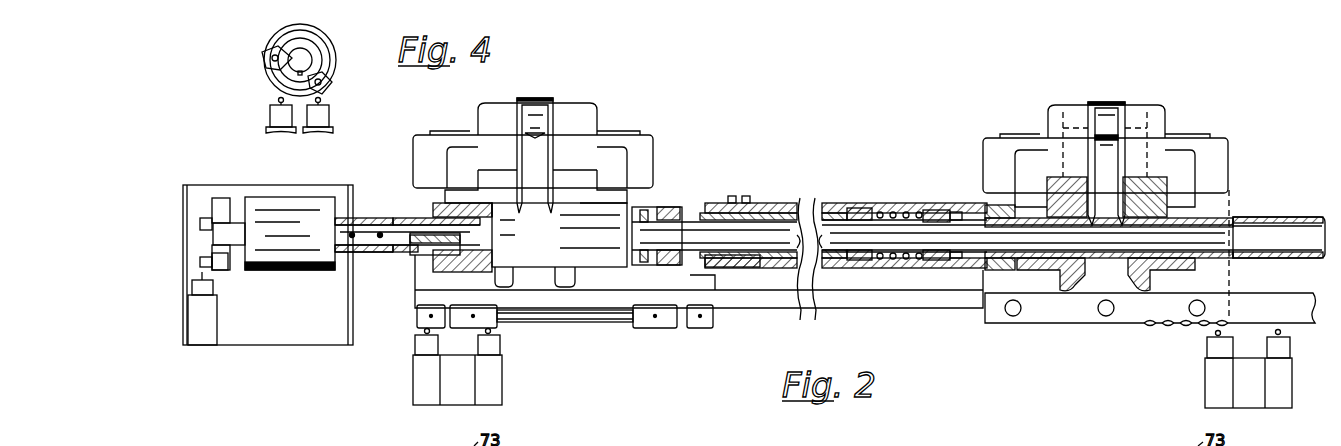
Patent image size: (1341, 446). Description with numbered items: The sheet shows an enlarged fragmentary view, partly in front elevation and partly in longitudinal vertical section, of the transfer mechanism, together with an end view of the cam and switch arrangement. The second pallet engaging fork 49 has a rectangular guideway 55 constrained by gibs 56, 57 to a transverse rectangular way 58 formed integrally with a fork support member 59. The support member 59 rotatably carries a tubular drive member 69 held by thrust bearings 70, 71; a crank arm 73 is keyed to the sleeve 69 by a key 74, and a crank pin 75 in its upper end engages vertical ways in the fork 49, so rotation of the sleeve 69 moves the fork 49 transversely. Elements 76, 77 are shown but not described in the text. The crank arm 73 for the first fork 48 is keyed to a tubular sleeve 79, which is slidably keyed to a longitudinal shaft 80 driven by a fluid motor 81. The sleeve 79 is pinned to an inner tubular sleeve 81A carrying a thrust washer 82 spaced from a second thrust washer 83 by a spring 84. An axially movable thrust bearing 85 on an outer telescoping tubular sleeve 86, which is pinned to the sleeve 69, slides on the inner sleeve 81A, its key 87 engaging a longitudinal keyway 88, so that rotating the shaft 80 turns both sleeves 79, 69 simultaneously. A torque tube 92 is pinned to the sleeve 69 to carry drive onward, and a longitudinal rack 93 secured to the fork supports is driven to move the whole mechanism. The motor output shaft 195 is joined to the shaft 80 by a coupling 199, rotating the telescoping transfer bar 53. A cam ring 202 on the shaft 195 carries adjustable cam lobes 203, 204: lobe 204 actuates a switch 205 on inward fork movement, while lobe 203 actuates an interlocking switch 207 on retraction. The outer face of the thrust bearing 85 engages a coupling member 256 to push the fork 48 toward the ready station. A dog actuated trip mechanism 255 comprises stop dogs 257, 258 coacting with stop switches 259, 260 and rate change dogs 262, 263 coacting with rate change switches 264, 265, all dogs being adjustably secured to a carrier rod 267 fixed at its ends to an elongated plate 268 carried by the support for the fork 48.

In FIG. 2, the pallet engaging fork 48 is at (654, 160).
In FIG. 2, the pallet engaging fork 49 is at (1230, 166).
In FIG. 2, the telescoping transfer bar 53 is at (784, 282).
In FIG. 2, the rectangular guideway 55 is at (1055, 185).
In FIG. 2, the gib 56 is at (1030, 200).
In FIG. 2, the gib 57 is at (1195, 198).
In FIG. 2, the transverse rectangular way 58 is at (1150, 180).
In FIG. 2, the fork support member 59 is at (536, 216).
In FIG. 2, the tubular drive member 69 is at (1183, 233).
In FIG. 2, the thrust bearing 70 is at (1003, 276).
In FIG. 2, the thrust bearing 71 is at (1174, 276).
In FIG. 2, the crank arm 73 is at (532, 112).
In FIG. 2, the key 74 is at (1108, 255).
In FIG. 2, the crank pin 75 is at (1138, 122).
In FIG. 2, the bore 76 is at (1076, 148).
In FIG. 2, the bore 77 is at (1135, 152).
In FIG. 2, the tubular sleeve 79 is at (440, 263).
In FIG. 2, the shaft 80 is at (405, 218).
In FIG. 2, the fluid motor 81 is at (305, 262).
In FIG. 2, the inner tubular sleeve 81A is at (770, 220).
In FIG. 2, the thrust washer 82 is at (930, 210).
In FIG. 2, the thrust washer 83 is at (855, 208).
In FIG. 2, the spring 84 is at (888, 208).
In FIG. 2, the thrust bearing 85 is at (706, 204).
In FIG. 2, the outer telescoping tubular sleeve 86 is at (818, 204).
In FIG. 2, the key 87 is at (745, 268).
In FIG. 2, the longitudinal keyway 88 is at (830, 257).
In FIG. 2, the torque tube 92 is at (1255, 260).
In FIG. 2, the rack 93 is at (1003, 326).
In FIG. 4, the motor output shaft 195 is at (314, 58).
In FIG. 2, the motor output shaft 195 is at (355, 250).
In FIG. 2, the coupling 199 is at (365, 216).
In FIG. 4, the cam ring 202 is at (329, 62).
In FIG. 2, the cam ring 202 is at (226, 270).
In FIG. 4, the cam lobe 203 is at (264, 60).
In FIG. 4, the cam lobe 204 is at (332, 83).
In FIG. 2, the cam lobe 204 is at (200, 262).
In FIG. 4, the switch 205 is at (330, 109).
In FIG. 2, the switch 205 is at (200, 222).
In FIG. 4, the interlocking switch 207 is at (272, 108).
In FIG. 2, the dog actuated trip mechanism 255 is at (511, 338).
In FIG. 2, the coupling member 256 is at (655, 268).
In FIG. 2, the stop dog 257 is at (417, 314).
In FIG. 2, the stop dog 258 is at (698, 328).
In FIG. 2, the stop switch 259 is at (418, 402).
In FIG. 2, the stop switch 260 is at (1283, 345).
In FIG. 2, the rate change dog 262 is at (497, 310).
In FIG. 2, the rate change dog 263 is at (652, 328).
In FIG. 2, the rate change switch 264 is at (484, 402).
In FIG. 2, the rate change switch 265 is at (1210, 387).
In FIG. 2, the carrier rod 267 is at (597, 322).
In FIG. 2, the elongated plate 268 is at (640, 282).